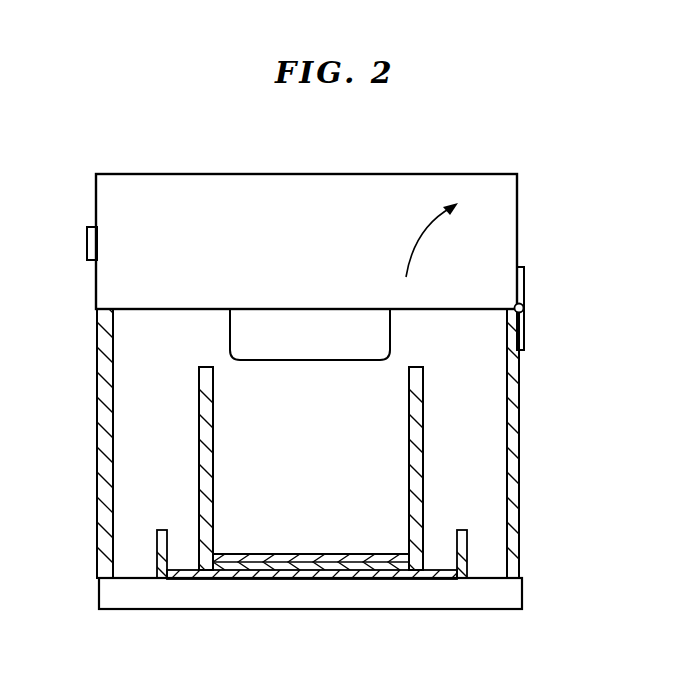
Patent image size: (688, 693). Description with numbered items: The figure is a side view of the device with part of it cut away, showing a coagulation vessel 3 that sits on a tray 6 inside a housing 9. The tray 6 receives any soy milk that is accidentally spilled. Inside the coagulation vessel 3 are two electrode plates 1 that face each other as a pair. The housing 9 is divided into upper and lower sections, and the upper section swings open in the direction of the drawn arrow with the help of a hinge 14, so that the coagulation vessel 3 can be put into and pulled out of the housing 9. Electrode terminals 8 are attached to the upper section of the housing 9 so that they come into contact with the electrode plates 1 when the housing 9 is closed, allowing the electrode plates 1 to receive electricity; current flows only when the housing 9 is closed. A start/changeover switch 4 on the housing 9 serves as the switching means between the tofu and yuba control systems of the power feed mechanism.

The electrode plate 1 is at (310, 461).
The coagulation vessel 3 is at (199, 410).
The start/changeover switch 4 is at (87, 240).
The tray 6 is at (453, 580).
The electrode terminal 8 is at (230, 334).
The housing 9 is at (313, 173).
The hinge 14 is at (527, 285).